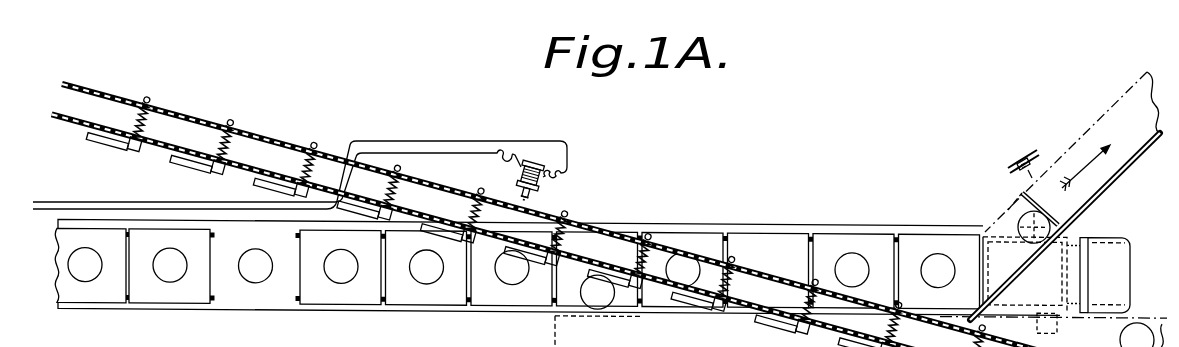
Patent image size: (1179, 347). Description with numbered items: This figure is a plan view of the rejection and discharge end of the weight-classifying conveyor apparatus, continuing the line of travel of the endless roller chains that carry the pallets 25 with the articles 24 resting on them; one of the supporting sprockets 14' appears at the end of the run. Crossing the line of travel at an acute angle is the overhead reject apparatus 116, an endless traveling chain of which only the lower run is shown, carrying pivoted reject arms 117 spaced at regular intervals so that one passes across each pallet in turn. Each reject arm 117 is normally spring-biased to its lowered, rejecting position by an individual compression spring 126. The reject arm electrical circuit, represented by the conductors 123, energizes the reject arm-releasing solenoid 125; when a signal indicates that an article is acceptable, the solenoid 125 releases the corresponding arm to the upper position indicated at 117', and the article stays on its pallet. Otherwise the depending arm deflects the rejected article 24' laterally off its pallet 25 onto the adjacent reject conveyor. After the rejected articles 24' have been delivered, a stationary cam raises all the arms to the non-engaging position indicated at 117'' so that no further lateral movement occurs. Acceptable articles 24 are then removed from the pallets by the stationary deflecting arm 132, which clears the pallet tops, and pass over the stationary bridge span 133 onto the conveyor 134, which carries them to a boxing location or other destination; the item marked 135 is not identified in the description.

The article 24 is at (213, 296).
The pallet 25 is at (158, 297).
The rejected article 24' is at (833, 311).
The sprocket 14' is at (1120, 275).
The overhead reject apparatus 116 is at (287, 142).
The reject arm 117 is at (323, 198).
The reject arm in upper position 117' is at (676, 318).
The reject arm in upper non-engaging position 117'' is at (902, 318).
The conductors 123 is at (133, 186).
The reject arm-releasing solenoid 125 is at (545, 187).
The compression spring 126 is at (228, 139).
The stationary deflecting arm 132 is at (1107, 192).
The stationary bridge span 133 is at (1010, 213).
The conveyor 134 is at (1093, 124).
The switch 135 is at (1025, 148).